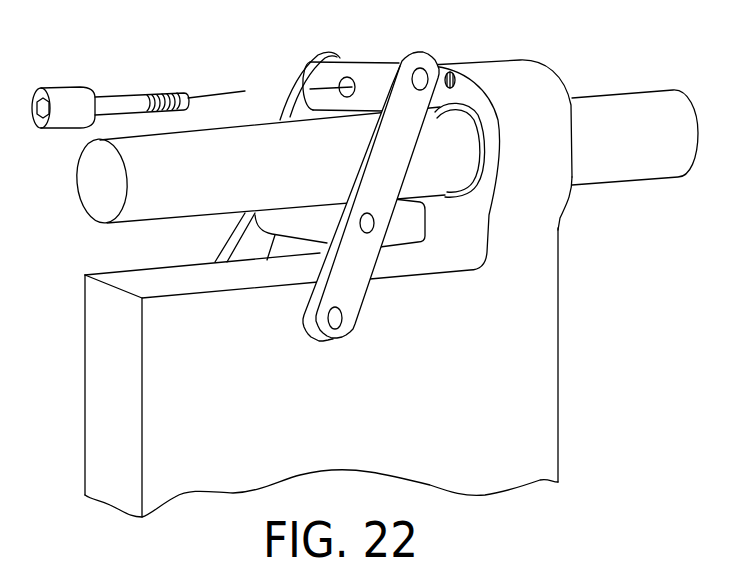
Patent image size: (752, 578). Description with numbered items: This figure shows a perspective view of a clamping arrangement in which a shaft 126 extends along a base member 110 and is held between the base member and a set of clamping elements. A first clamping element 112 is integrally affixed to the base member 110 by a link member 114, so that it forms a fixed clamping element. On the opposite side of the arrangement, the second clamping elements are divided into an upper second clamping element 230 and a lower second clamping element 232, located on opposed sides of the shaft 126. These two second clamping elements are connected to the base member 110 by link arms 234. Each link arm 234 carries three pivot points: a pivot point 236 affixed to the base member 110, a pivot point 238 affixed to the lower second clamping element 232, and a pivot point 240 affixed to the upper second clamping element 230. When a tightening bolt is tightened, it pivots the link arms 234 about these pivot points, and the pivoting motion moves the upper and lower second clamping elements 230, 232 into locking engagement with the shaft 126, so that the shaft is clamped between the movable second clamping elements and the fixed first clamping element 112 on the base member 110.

The base member 110 is at (423, 426).
The first clamping element 112 is at (515, 80).
The link member 114 is at (530, 220).
The shaft 126 is at (652, 152).
The upper second clamping element 230 is at (332, 74).
The lower second clamping element 232 is at (298, 225).
The link arms 234 is at (383, 158).
The pivot point 236 is at (342, 318).
The pivot point 238 is at (360, 222).
The pivot point 240 is at (115, 97).